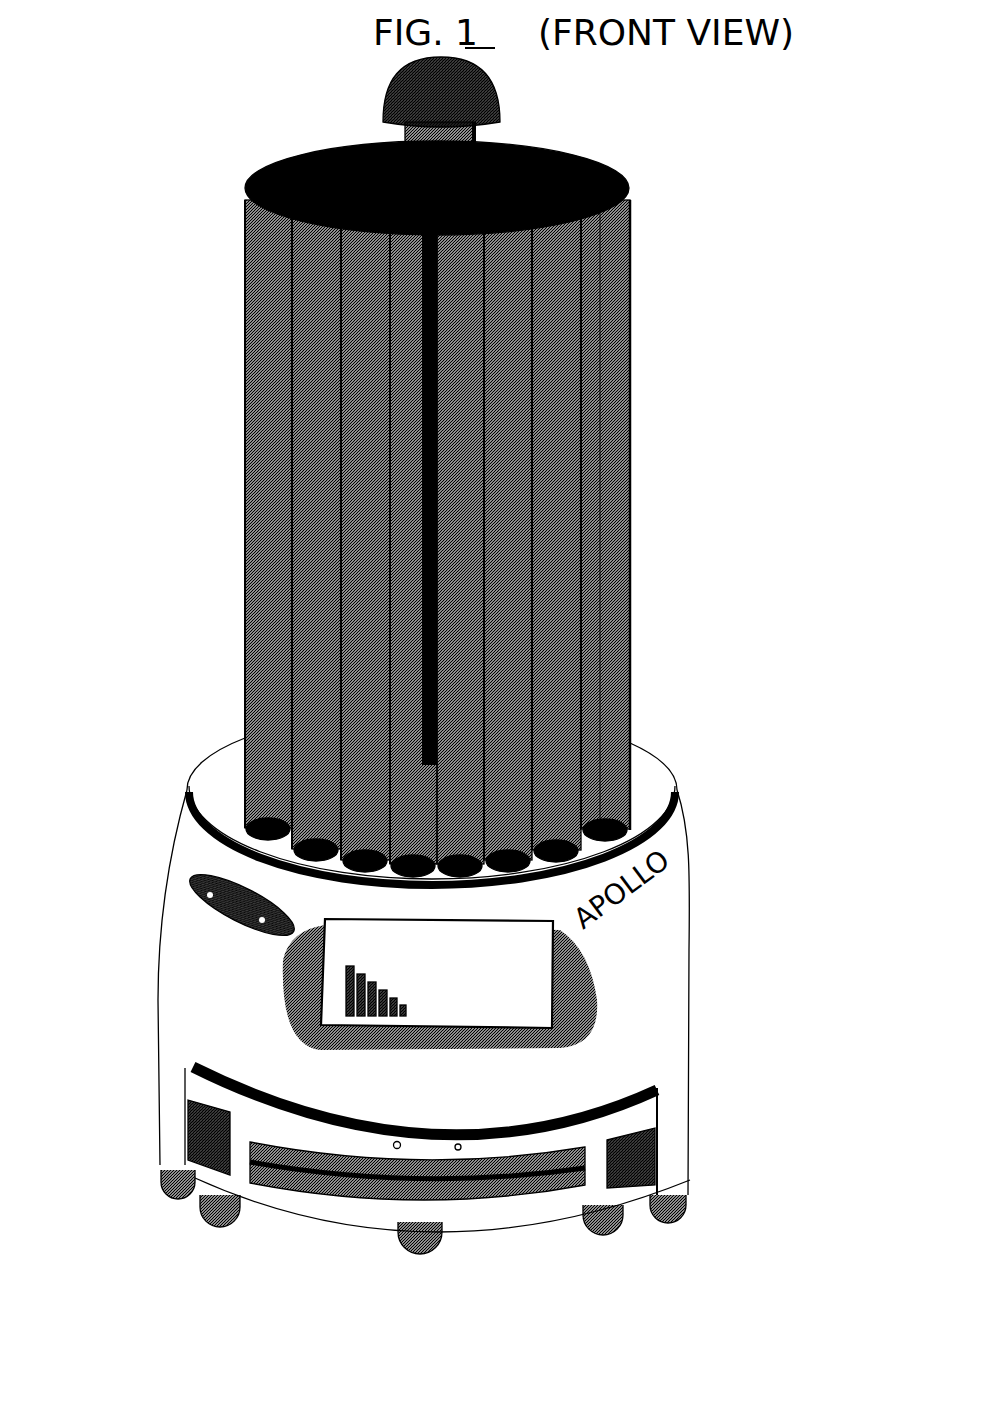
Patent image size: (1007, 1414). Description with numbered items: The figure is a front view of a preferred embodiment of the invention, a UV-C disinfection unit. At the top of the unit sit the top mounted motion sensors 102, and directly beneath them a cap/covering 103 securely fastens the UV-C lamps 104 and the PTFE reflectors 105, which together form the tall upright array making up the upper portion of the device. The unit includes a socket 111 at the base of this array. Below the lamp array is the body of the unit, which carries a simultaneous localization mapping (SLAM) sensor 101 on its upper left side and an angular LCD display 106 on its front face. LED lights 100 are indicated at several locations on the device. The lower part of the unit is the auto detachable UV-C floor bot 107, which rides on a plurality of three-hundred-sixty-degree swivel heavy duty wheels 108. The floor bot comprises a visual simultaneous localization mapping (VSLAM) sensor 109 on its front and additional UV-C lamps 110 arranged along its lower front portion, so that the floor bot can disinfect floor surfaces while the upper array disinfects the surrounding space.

The LED lights 100 is at (340, 235).
The simultaneous localization mapping (SLAM) sensor 101 is at (210, 913).
The top mounted motion sensors 102 is at (498, 122).
The cap/covering 103 is at (620, 178).
The UV-C lamps 104 is at (620, 330).
The PTFE reflectors 105 is at (626, 470).
The angular LCD display 106 is at (555, 962).
The auto detachable UV-C floor bot 107 is at (632, 1115).
The 360-degree swivel heavy duty wheels 108 is at (668, 1215).
The visual simultaneous localization mapping (VSLAM) sensor 109 is at (392, 1143).
The additional UV-C lamps 110 is at (640, 1180).
The socket 111 is at (612, 832).